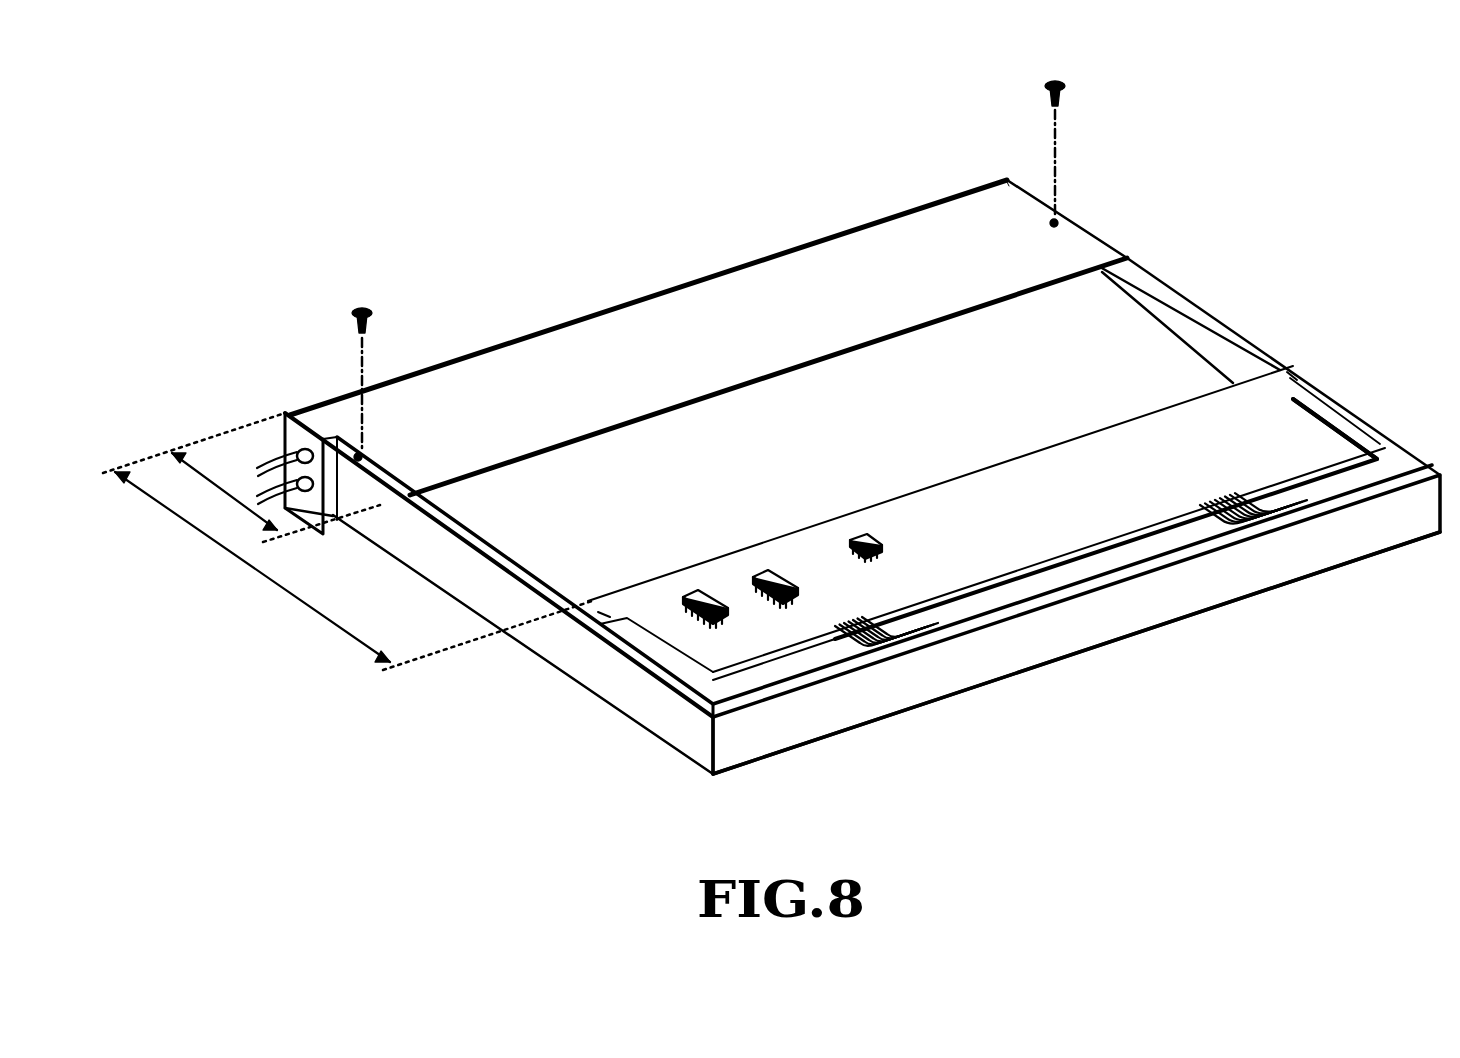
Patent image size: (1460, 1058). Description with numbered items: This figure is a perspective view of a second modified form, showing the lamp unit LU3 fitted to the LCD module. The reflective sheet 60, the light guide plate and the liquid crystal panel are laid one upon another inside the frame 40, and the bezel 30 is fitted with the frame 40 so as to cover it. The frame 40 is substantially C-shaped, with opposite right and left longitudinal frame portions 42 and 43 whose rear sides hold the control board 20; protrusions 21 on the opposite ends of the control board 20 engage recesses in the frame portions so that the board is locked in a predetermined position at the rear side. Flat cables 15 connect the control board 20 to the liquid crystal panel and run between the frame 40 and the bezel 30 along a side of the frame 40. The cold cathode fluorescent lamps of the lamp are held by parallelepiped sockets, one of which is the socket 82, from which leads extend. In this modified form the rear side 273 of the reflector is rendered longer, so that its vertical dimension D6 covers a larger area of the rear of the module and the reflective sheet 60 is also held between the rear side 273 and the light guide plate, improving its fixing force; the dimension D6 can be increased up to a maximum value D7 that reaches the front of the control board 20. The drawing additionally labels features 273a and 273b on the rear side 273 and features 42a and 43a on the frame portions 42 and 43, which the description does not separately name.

The rear side 273 is at (558, 347).
The screw hole 273a is at (1056, 222).
The screw hole 273b is at (358, 456).
The lighting unit LU3 is at (753, 298).
The reflective sheet 60 is at (1137, 340).
The protrusion 21 is at (590, 628).
The notch of frame 43a is at (1317, 387).
The longitudinal frame portion 43 is at (1357, 417).
The socket 82 is at (298, 412).
The rim of chassis 42a is at (567, 627).
The longitudinal frame portion 42 is at (670, 718).
The flat cable 15 is at (907, 655).
The control board 20 is at (1053, 535).
The bezel 30 is at (1012, 650).
The frame 40 is at (765, 677).
The vertical dimension D6 is at (241, 477).
The maximum value D7 is at (353, 571).